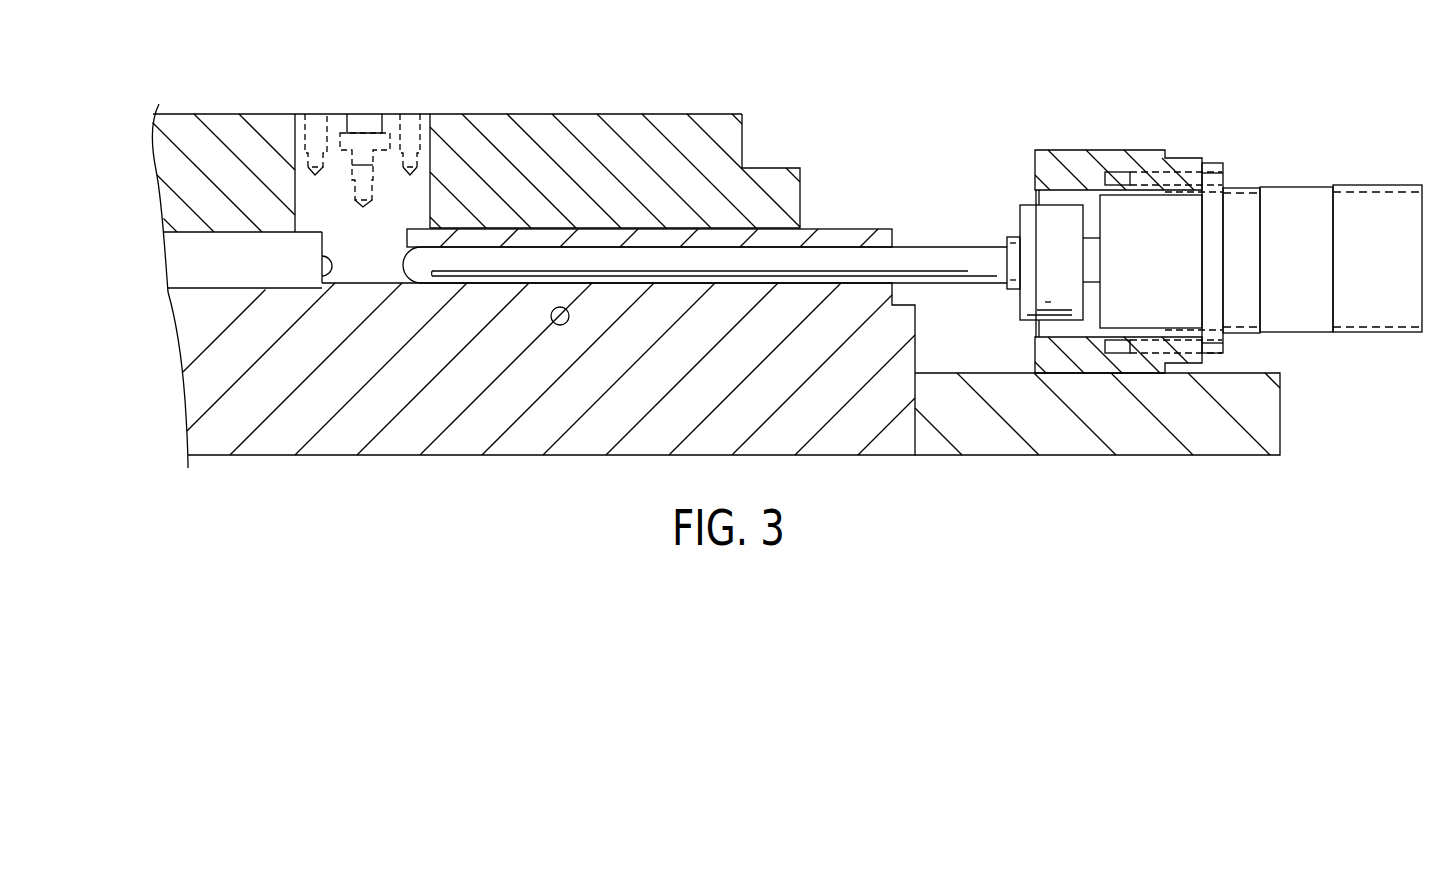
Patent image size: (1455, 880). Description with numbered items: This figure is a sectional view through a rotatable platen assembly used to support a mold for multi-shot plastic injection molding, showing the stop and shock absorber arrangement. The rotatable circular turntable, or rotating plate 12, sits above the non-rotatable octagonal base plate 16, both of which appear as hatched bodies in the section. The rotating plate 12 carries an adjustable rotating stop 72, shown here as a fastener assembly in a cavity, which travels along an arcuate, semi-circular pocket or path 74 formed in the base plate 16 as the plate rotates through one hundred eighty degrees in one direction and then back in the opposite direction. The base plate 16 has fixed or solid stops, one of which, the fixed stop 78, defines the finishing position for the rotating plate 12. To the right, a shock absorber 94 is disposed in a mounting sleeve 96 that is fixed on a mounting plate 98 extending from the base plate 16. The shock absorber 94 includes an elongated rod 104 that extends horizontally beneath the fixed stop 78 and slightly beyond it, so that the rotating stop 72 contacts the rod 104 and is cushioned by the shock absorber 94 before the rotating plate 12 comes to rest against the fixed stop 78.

The rotating plate 12 is at (597, 132).
The base plate 16 is at (473, 435).
The adjustable rotating stop 72 is at (336, 196).
The arcuate pocket 74 is at (243, 291).
The fixed stop 78 is at (442, 238).
The shock absorber 94 is at (1243, 183).
The mounting sleeve 96 is at (1082, 163).
The mounting plate 98 is at (1133, 437).
The elongated rod 104 is at (837, 253).